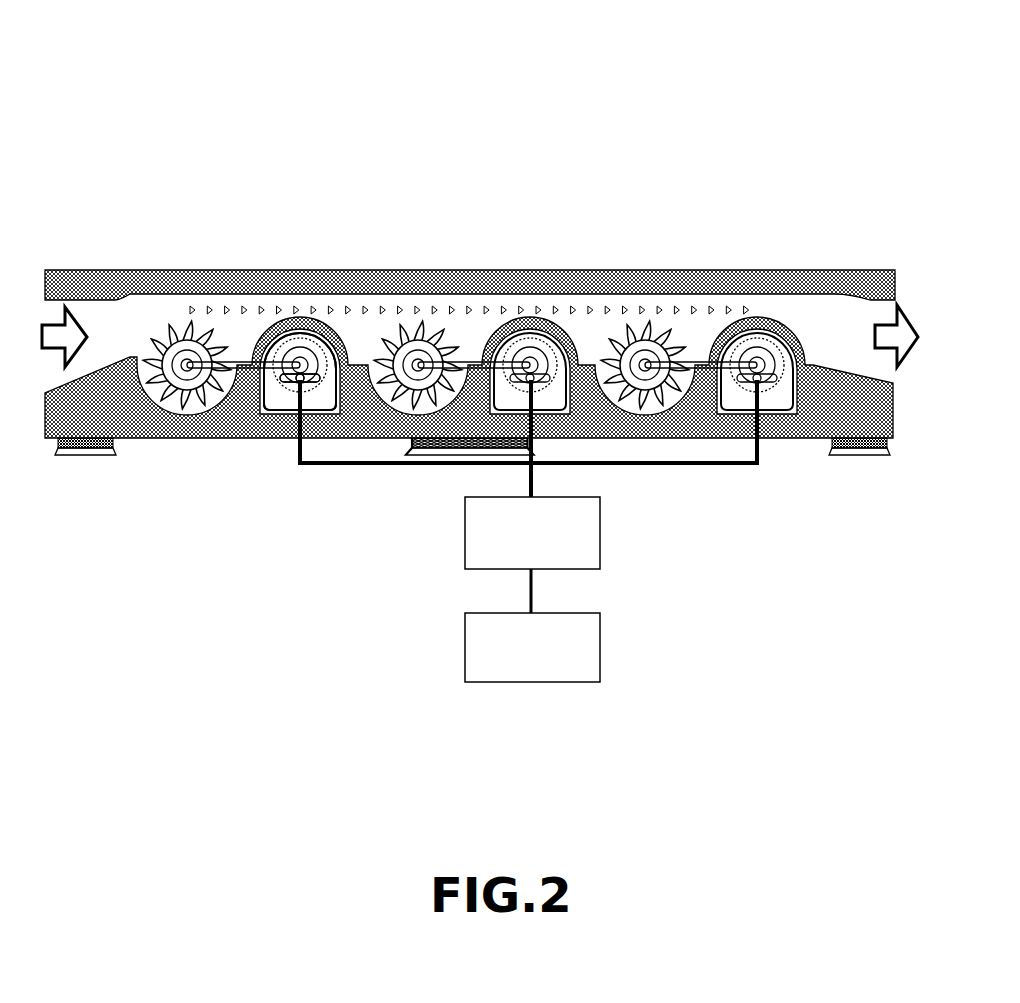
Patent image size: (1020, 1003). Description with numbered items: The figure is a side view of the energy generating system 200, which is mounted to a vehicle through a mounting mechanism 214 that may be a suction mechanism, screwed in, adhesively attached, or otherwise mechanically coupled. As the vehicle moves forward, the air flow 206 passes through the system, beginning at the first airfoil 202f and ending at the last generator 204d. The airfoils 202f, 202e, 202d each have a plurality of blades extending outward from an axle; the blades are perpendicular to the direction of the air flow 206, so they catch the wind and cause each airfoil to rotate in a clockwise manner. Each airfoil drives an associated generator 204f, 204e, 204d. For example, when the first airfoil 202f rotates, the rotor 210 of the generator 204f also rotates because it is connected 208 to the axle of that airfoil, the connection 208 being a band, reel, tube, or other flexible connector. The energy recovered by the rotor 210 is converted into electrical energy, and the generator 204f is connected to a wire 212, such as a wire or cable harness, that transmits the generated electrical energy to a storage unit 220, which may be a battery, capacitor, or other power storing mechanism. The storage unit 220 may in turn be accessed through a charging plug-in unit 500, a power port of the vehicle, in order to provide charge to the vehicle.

The energy generating system 200 is at (504, 88).
The first airfoil 202f is at (190, 312).
The airfoil 202e is at (418, 315).
The airfoil 202d is at (645, 320).
The generator 204f is at (276, 400).
The generator 204e is at (531, 340).
The last generator 204d is at (753, 340).
The air flow 206 is at (383, 310).
The connection 208 is at (257, 397).
The rotor 210 is at (302, 385).
The wire 212 is at (300, 382).
The mounting mechanism 214 is at (858, 452).
The storage unit 220 is at (532, 533).
The charging plug-in unit 500 is at (532, 647).